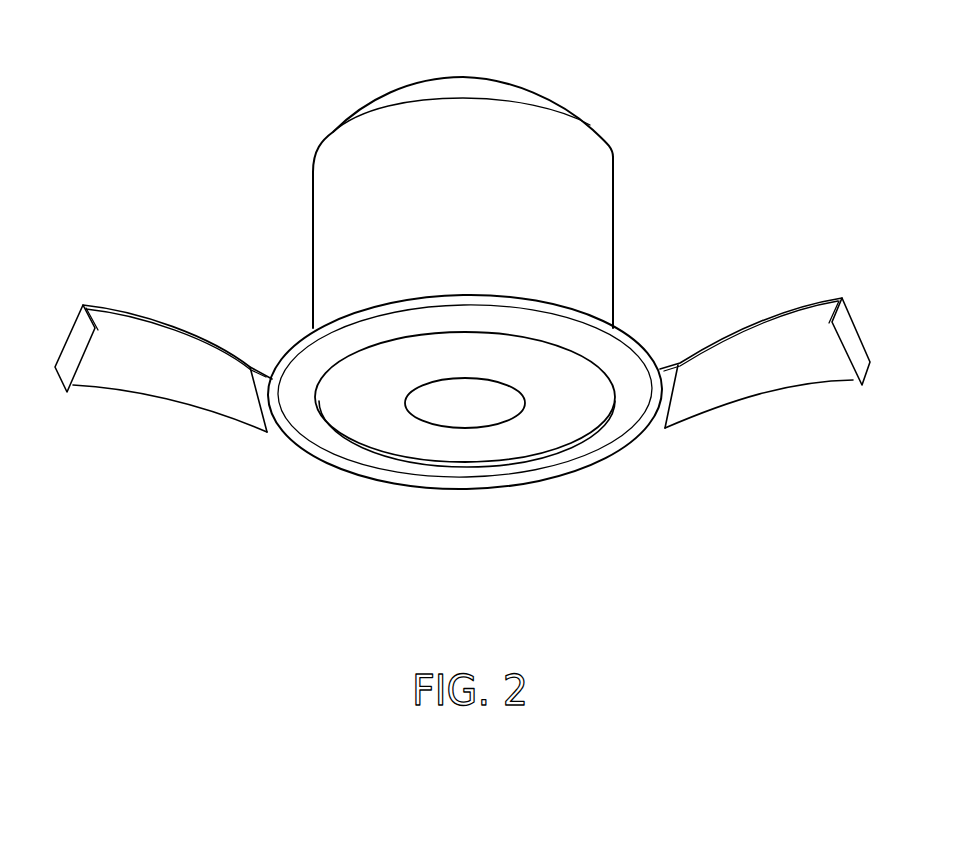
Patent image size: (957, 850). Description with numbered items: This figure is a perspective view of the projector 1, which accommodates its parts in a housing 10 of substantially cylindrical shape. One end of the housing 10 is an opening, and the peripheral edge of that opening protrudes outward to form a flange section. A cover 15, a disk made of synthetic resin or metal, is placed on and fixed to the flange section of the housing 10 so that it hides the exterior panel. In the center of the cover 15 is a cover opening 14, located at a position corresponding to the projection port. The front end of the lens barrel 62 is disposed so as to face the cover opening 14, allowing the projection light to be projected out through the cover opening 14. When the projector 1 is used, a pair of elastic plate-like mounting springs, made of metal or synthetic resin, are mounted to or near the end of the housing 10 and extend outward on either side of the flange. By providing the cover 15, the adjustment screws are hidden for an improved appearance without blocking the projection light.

The projector 1 is at (614, 194).
The housing 10 is at (433, 88).
The cover opening 14 is at (497, 382).
The cover 15 is at (360, 462).
The lens barrel 62 is at (447, 412).